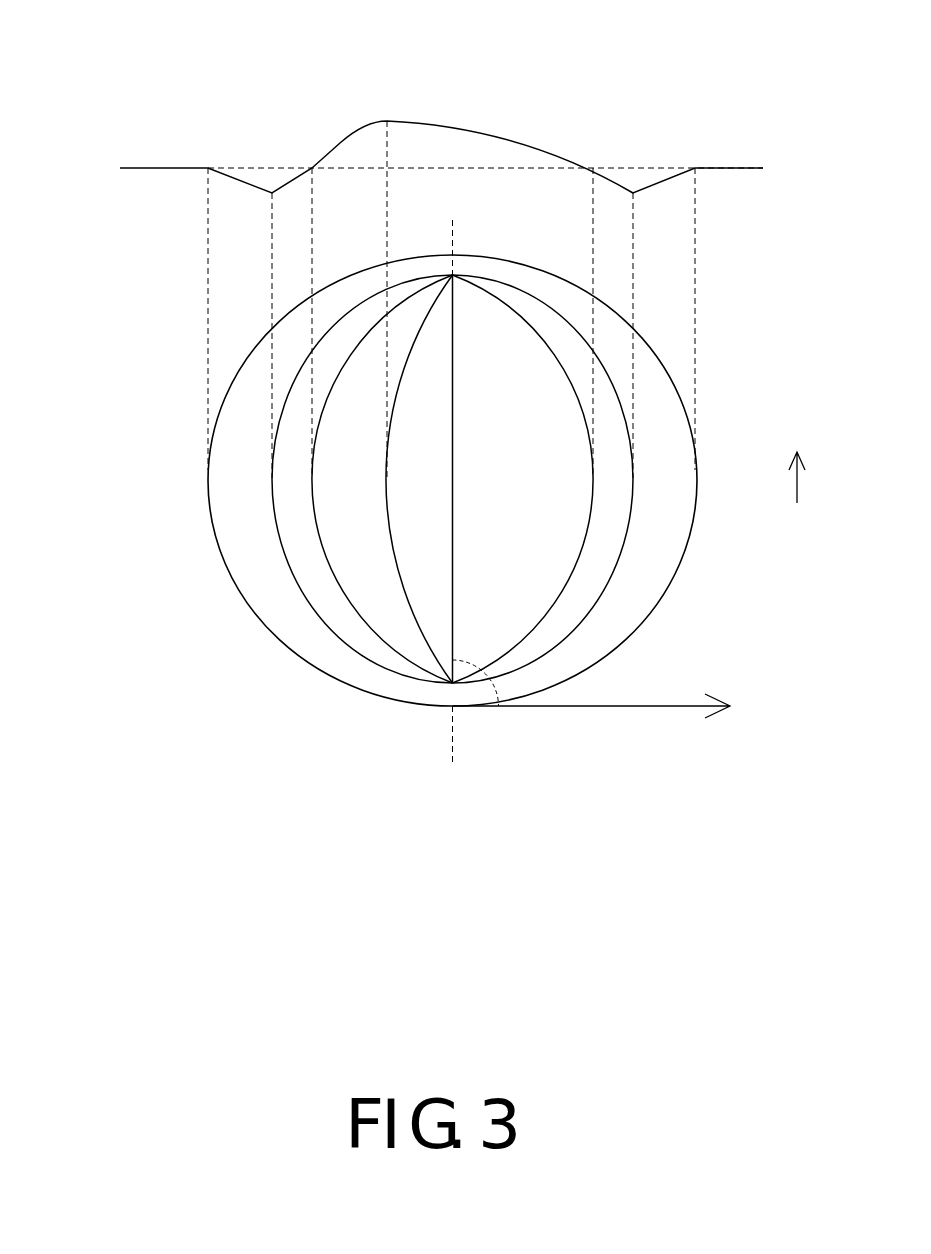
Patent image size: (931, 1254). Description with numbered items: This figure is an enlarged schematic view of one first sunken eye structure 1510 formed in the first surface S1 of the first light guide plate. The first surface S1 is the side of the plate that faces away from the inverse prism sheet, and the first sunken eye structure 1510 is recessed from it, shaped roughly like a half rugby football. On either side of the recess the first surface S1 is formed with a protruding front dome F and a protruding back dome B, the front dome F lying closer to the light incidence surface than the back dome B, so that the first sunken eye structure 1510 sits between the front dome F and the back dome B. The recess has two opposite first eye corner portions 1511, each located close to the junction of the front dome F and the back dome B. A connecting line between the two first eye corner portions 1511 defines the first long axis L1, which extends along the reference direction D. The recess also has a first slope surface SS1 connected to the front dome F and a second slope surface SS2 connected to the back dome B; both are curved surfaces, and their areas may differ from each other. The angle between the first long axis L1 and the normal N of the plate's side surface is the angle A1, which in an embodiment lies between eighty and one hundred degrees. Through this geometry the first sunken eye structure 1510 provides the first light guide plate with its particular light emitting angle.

The first surface S1 is at (148, 170).
The first slope surface SS1 is at (343, 145).
The second slope surface SS2 is at (488, 144).
The front dome F is at (272, 193).
The back dome B is at (633, 193).
The first sunken eye structure 1510 is at (348, 357).
The first eye corner portion 1511 is at (452, 276).
The first long axis L1 is at (455, 742).
The angle A1 is at (497, 684).
The normal N is at (648, 708).
The reference direction D is at (804, 477).